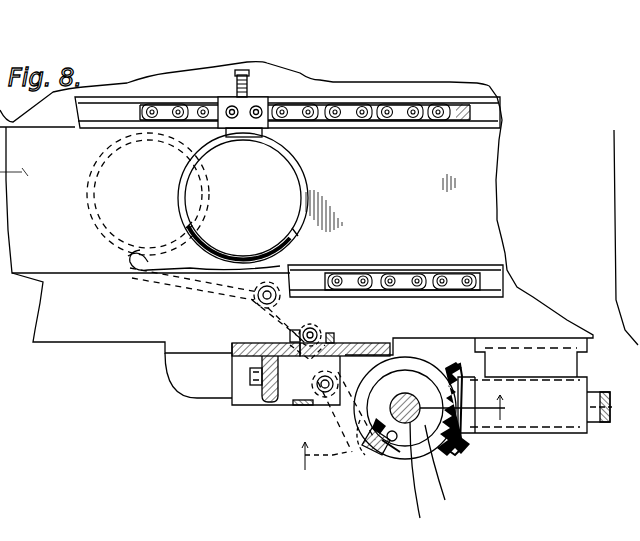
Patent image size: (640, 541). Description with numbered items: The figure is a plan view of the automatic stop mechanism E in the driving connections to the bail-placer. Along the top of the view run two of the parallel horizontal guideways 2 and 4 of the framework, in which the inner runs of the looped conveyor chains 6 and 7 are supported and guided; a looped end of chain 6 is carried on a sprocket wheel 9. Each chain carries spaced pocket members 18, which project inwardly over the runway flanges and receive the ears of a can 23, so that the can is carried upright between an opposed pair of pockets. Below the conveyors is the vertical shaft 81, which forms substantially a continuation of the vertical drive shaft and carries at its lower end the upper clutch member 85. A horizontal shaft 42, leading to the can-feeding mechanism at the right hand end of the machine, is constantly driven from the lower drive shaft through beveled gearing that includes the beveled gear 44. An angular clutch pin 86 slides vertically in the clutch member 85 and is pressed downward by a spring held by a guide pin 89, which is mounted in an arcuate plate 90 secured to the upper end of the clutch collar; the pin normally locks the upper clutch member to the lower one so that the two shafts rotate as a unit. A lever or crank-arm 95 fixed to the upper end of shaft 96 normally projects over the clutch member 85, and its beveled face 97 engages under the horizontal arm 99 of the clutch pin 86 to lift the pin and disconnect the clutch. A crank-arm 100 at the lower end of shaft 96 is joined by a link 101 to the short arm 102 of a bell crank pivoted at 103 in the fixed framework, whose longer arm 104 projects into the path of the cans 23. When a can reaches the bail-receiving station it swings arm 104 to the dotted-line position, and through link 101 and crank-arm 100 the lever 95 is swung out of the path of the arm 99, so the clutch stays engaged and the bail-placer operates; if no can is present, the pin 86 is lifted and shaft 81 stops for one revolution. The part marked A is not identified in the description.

The guideway 2 is at (505, 258).
The guideway 4 is at (470, 97).
The conveyor chain 6 is at (485, 265).
The conveyor chain 7 is at (518, 122).
The sprocket wheel 9 is at (402, 432).
The pocket member 18 is at (243, 122).
The can 23 is at (263, 198).
The horizontal shaft 42 is at (612, 420).
The beveled gear 44 is at (462, 443).
The vertical shaft 81 is at (427, 445).
The upper clutch member 85 is at (446, 500).
The clutch pin 86 is at (370, 438).
The guide pin 89 is at (380, 430).
The arcuate plate 90 is at (427, 475).
The lever or crank-arm 95 is at (323, 386).
The shaft 96 is at (286, 405).
The beveled face 97 is at (386, 450).
The horizontal arm 99 is at (375, 445).
The crank-arm 100 is at (343, 347).
The link 101 is at (304, 334).
The short arm 102 is at (262, 300).
The pivot 103 is at (194, 296).
The longer arm 104 is at (163, 270).
The chain A is at (332, 98).
The automatic stop mechanism E is at (406, 475).